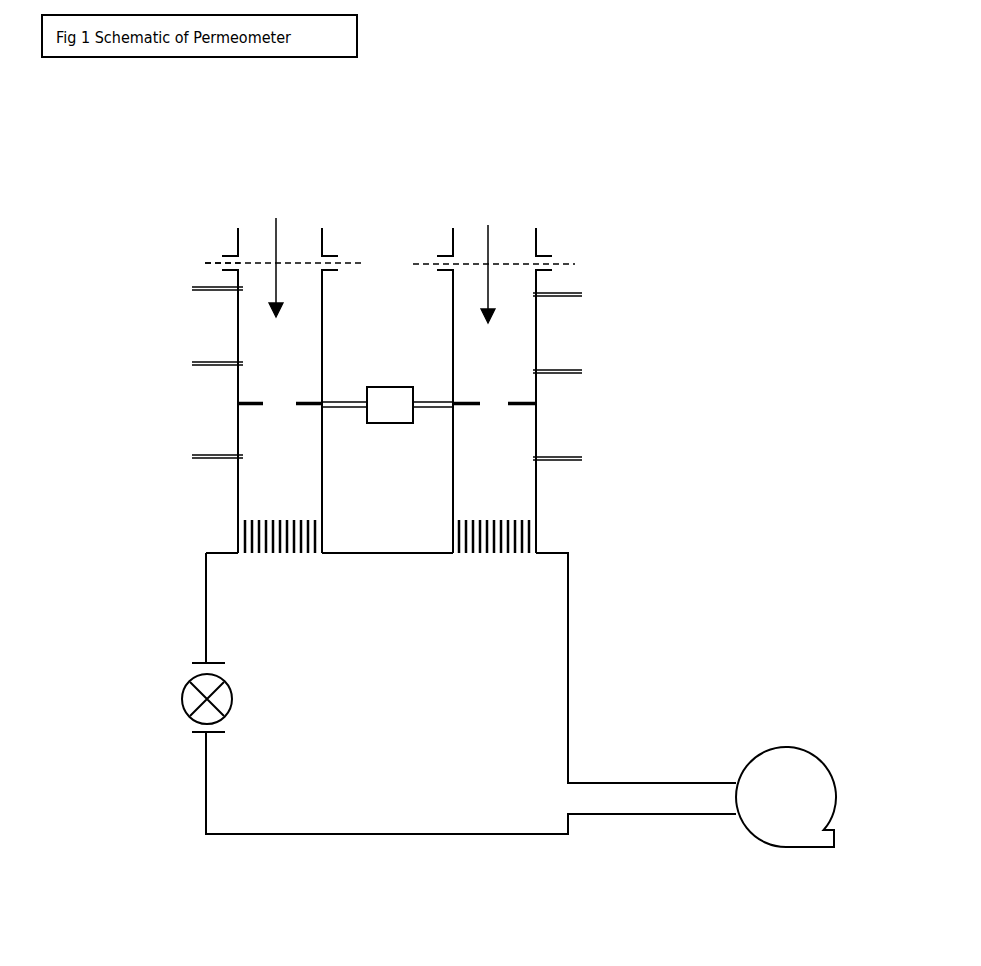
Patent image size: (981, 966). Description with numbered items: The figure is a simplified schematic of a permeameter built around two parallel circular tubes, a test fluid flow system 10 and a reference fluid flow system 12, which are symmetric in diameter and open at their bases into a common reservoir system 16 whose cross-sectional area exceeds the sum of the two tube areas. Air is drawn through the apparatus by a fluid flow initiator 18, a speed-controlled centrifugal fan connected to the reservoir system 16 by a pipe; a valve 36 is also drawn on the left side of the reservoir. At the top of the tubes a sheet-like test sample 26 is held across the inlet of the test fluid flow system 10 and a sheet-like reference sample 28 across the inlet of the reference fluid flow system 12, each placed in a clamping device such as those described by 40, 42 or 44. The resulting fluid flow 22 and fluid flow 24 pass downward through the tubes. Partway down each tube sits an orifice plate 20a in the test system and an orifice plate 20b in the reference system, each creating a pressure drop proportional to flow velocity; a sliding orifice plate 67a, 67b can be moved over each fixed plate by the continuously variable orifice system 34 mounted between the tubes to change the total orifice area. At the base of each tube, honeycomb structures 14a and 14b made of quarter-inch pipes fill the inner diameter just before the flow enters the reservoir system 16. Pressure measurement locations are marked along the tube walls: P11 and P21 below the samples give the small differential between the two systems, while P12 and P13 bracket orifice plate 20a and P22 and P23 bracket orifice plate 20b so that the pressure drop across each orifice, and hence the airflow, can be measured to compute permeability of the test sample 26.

The test fluid flow system 10 is at (237, 330).
The reference fluid flow system 12 is at (536, 329).
The honeycomb structure 14a is at (262, 537).
The honeycomb structure 14b is at (512, 538).
The reservoir system 16 is at (497, 696).
The fluid flow initiator 18 is at (787, 775).
The orifice plate 20a is at (167, 397).
The orifice plate 20b is at (587, 397).
The sliding orifice plate 67a is at (238, 403).
The sliding orifice plate 67b is at (536, 403).
The fluid flow 22 is at (276, 253).
The fluid flow 24 is at (489, 259).
The test sample 26 is at (205, 262).
The reference sample 28 is at (572, 263).
The continuously variable orifice system 34 is at (393, 425).
The valve 36 is at (182, 687).
The clamping device 40 is at (256, 213).
The clamping device 42 is at (256, 213).
The clamping device 44 is at (235, 247).
The pressure measurement location P11 is at (202, 290).
The pressure measurement location P12 is at (202, 363).
The pressure measurement location P13 is at (202, 457).
The pressure measurement location P21 is at (571, 297).
The pressure measurement location P22 is at (571, 372).
The pressure measurement location P23 is at (571, 460).